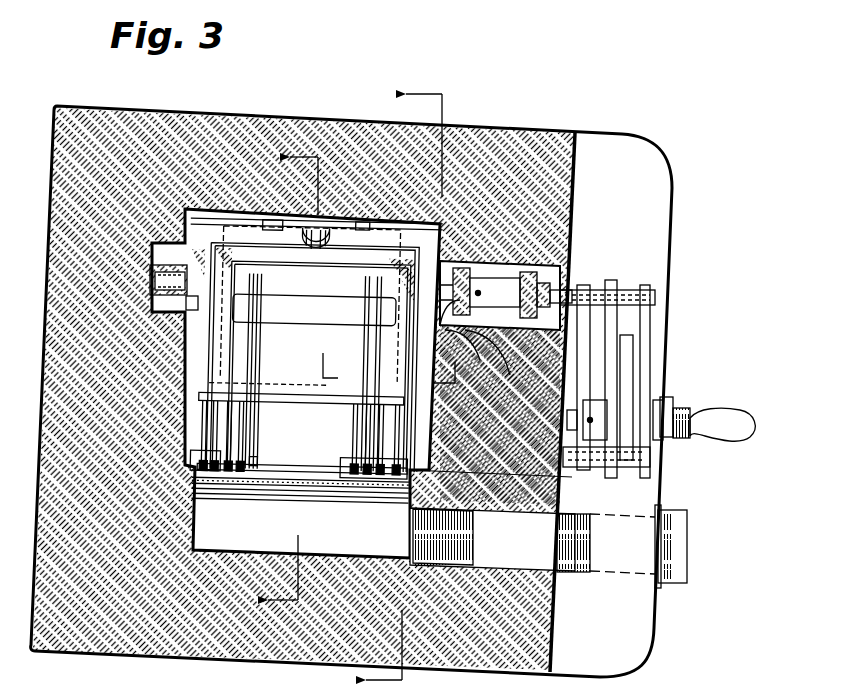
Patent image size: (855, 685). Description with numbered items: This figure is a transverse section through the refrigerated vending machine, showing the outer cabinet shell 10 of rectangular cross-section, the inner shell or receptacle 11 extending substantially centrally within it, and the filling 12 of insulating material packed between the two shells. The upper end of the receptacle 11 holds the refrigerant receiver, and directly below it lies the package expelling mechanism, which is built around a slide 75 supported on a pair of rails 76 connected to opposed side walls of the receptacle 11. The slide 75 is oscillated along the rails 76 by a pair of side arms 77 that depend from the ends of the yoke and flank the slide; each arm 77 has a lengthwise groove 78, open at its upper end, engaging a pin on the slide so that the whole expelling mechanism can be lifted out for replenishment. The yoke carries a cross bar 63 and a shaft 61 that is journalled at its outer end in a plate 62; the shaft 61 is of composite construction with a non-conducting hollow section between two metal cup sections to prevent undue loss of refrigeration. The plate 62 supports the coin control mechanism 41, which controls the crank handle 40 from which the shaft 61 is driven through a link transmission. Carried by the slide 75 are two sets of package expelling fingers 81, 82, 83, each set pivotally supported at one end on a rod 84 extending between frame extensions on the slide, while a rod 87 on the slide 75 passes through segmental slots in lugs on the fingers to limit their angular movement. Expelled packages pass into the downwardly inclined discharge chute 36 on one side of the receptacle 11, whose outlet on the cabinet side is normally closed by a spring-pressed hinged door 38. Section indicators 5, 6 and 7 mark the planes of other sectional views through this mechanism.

The outer cabinet shell 10 is at (322, 121).
The filling 12 is at (150, 458).
The plate 62 is at (572, 220).
The discharge chute 36 is at (483, 512).
The spring-pressed hinged door 38 is at (688, 548).
The side arms 77 is at (178, 300).
The groove 78 is at (192, 316).
The shaft 61 is at (503, 262).
The inner shell or receptacle 11 is at (386, 222).
The cross bar 63 is at (310, 228).
The slide 75 is at (262, 368).
The rails 76 is at (230, 346).
The finger 82 is at (440, 450).
The finger 83 is at (360, 313).
The finger 81 is at (233, 441).
The rod 87 is at (318, 406).
The rod 84 is at (300, 470).
The coin control mechanism 41 is at (660, 298).
The crank handle 40 is at (722, 420).
The section line 6- 6 is at (390, 384).
The section line 7- 7 is at (280, 381).
The section line 5- 5 is at (389, 357).